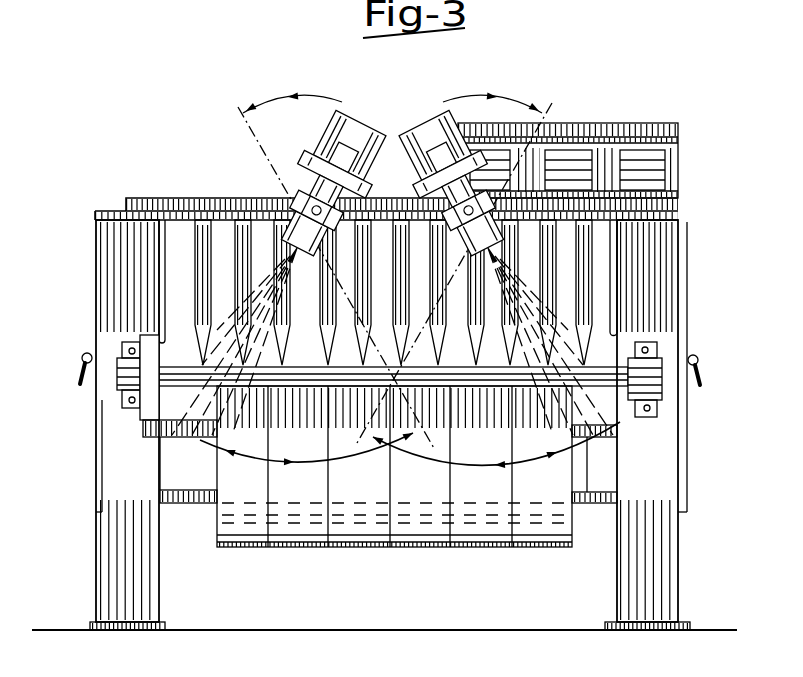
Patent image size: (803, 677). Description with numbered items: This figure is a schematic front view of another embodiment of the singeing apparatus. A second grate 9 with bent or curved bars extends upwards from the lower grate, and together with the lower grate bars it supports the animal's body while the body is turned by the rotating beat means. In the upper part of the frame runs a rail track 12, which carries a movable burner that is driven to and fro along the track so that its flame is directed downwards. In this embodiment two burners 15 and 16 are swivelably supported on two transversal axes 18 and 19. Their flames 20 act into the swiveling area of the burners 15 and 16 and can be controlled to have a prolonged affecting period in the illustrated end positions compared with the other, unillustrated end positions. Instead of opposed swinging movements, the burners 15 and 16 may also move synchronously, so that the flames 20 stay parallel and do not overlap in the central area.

The second grate 9 is at (204, 229).
The rail track 12 is at (153, 200).
The burner 15 is at (330, 262).
The burner 16 is at (538, 258).
The transversal axis 18 is at (291, 197).
The transversal axis 19 is at (513, 233).
The flames 20 is at (230, 333).